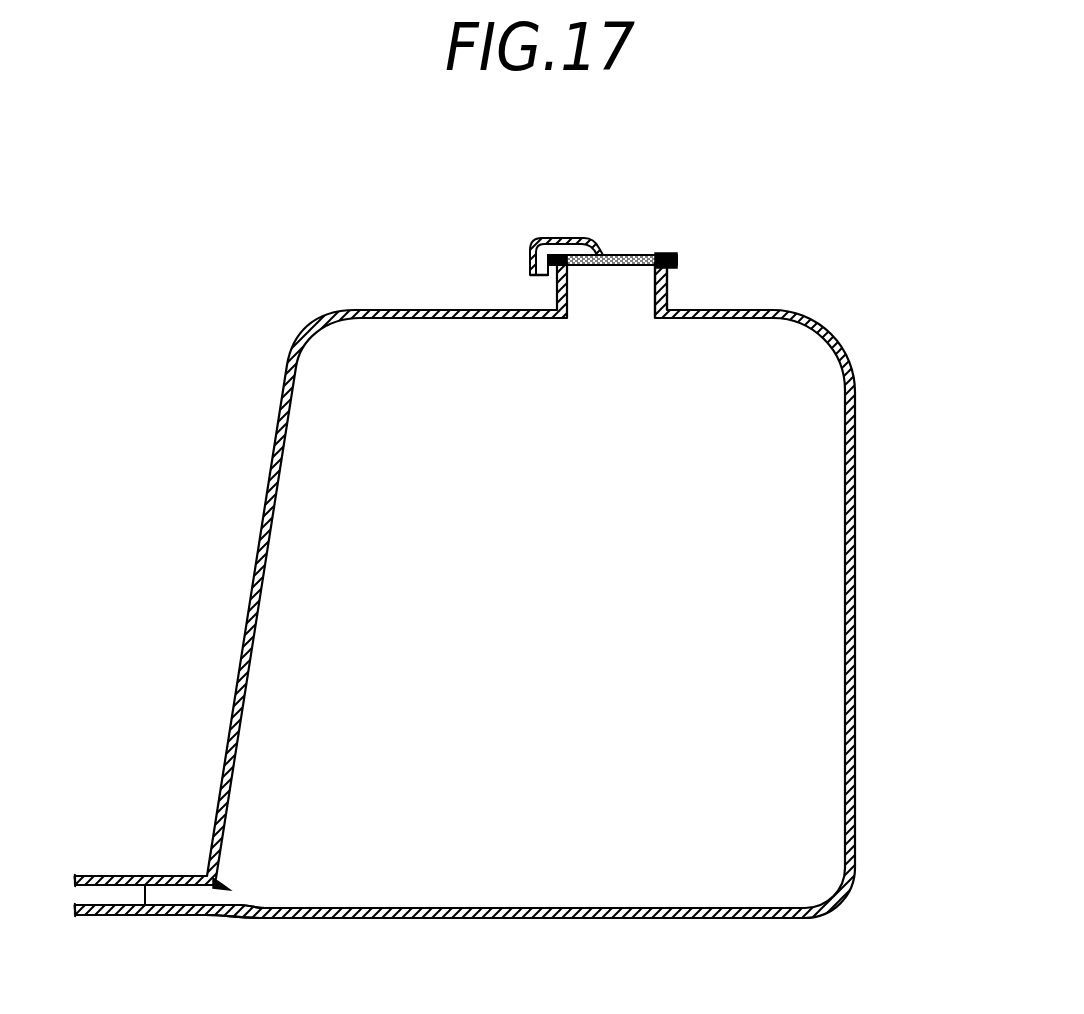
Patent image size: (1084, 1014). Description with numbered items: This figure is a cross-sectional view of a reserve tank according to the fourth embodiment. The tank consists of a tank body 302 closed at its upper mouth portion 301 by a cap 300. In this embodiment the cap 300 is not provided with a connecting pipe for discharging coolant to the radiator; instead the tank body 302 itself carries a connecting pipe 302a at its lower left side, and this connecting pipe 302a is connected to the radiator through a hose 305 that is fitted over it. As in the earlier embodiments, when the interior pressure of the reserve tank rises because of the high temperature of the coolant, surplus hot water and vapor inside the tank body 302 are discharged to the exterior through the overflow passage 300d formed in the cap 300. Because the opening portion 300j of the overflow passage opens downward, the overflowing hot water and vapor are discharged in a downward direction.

The cap 300 is at (611, 227).
The overflow passage 300d is at (548, 239).
The opening portion 300j is at (543, 273).
The mouth portion of tank 301 is at (668, 283).
The tank body 302 is at (855, 593).
The connecting pipe 302a is at (226, 907).
The hose 305 is at (140, 917).